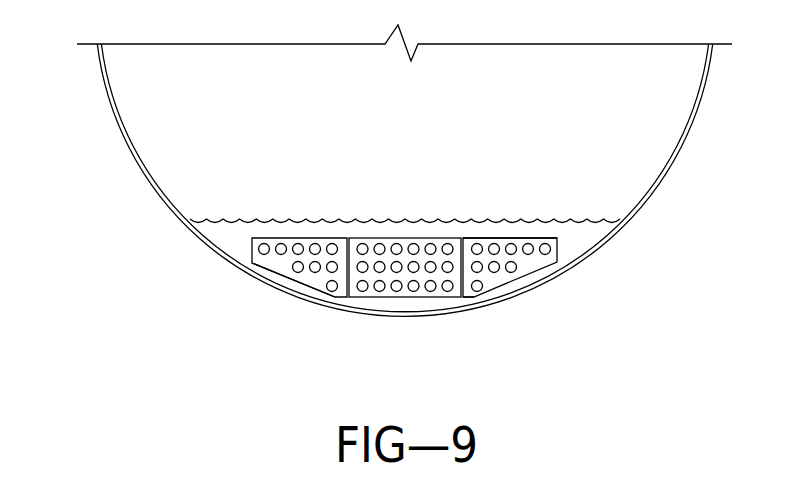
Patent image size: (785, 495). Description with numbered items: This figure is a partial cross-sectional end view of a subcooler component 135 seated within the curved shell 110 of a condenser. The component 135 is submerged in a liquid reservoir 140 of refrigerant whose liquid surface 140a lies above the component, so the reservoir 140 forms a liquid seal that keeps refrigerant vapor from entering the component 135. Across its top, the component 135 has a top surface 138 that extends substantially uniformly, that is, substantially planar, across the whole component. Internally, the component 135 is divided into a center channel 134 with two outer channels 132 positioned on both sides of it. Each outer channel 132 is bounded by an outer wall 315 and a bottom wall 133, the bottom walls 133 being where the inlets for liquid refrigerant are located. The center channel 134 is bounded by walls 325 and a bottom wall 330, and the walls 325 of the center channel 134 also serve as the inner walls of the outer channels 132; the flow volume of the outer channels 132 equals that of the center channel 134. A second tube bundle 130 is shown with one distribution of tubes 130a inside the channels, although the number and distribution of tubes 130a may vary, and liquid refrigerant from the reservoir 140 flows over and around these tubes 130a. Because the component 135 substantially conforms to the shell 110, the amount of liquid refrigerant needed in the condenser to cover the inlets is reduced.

The shell 110 is at (368, 187).
The outer channels 132 is at (503, 286).
The center channel 134 is at (368, 298).
The liquid reservoir 140 is at (587, 232).
The liquid surface 140a is at (213, 222).
The second tube bundle 130 is at (434, 270).
The tubes 130a is at (332, 292).
The bottom walls 133 is at (288, 275).
The top surface 138 is at (268, 256).
The bottom wall 330 is at (422, 297).
The outer walls 315 is at (563, 253).
The walls 325 is at (473, 297).
The subcooler component 135 is at (485, 237).